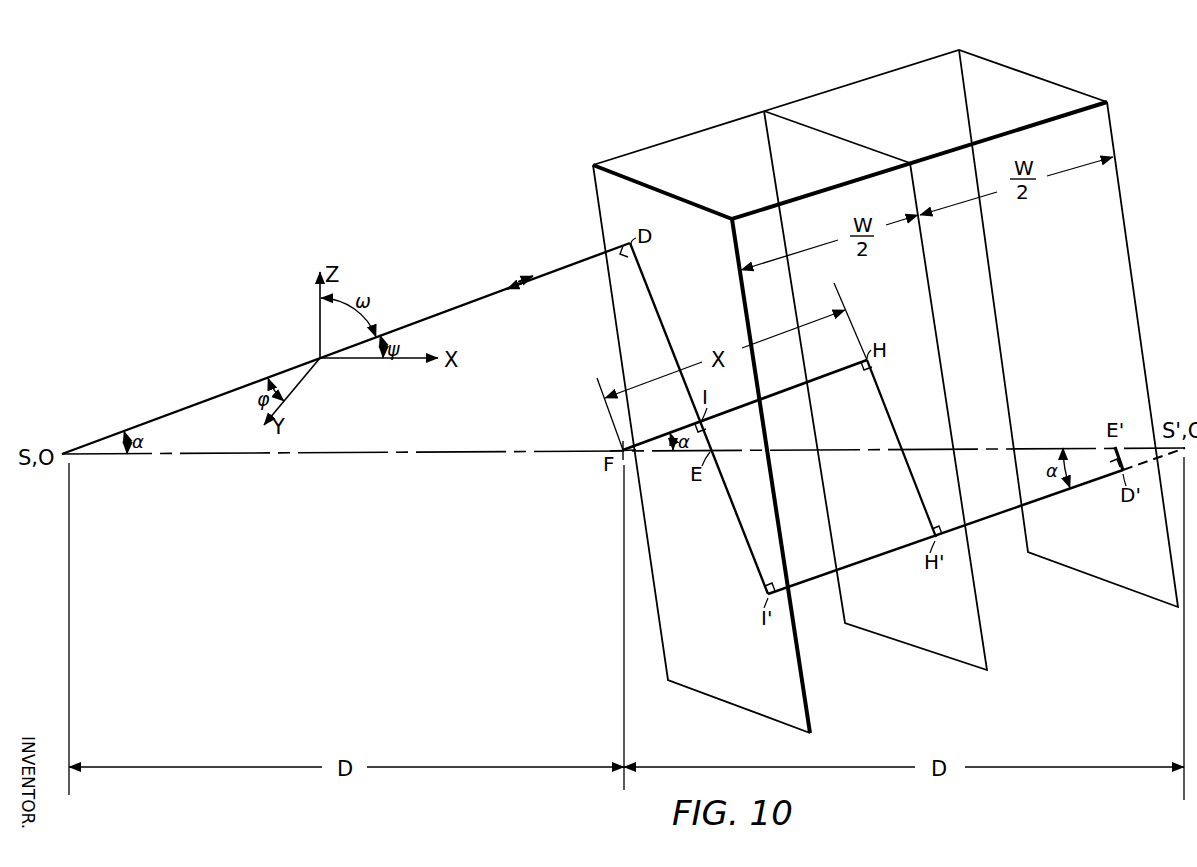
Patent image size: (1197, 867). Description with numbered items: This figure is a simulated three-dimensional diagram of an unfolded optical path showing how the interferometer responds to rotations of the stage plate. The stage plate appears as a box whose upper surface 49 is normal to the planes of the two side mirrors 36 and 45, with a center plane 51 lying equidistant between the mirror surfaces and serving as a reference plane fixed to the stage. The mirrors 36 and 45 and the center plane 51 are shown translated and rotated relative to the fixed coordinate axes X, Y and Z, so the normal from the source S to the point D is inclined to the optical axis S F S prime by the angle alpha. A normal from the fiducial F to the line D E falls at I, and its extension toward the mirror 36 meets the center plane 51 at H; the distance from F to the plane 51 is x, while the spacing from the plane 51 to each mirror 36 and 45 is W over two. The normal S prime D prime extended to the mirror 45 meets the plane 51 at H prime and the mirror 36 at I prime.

The upper surface 49 is at (676, 148).
The mirror 36 is at (717, 694).
The center plane 51 is at (908, 635).
The mirror 45 is at (1100, 565).